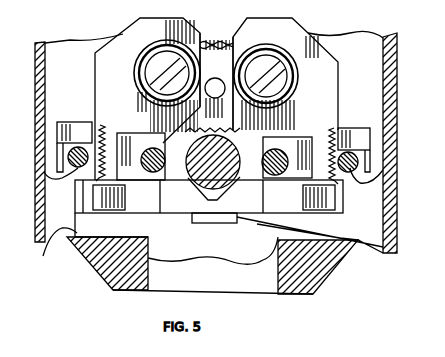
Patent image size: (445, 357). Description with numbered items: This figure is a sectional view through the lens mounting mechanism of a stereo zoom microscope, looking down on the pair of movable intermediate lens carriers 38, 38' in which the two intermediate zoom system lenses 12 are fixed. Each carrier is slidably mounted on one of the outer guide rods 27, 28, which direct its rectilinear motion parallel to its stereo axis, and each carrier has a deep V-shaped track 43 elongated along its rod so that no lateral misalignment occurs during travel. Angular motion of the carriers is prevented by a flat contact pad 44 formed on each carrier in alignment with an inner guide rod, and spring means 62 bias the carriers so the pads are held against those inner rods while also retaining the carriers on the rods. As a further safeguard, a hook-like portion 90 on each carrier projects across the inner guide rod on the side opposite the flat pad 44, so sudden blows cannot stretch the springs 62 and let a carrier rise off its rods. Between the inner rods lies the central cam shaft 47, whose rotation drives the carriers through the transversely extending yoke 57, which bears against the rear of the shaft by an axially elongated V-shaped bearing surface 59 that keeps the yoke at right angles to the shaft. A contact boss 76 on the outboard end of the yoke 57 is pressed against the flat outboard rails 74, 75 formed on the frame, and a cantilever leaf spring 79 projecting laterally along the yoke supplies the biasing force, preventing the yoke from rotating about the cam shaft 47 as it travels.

The intermediate movable zoom system lens 12 is at (168, 57).
The movable intermediate lens carrier 38' is at (147, 92).
The movable intermediate lens carrier 38 is at (285, 70).
The V-shaped track 43 is at (67, 167).
The flat contact pad 44 is at (157, 147).
The central cam shaft 47 is at (222, 169).
The spring means 62 is at (100, 127).
The outer guide rod 28 is at (44, 172).
The outer guide rod 27 is at (383, 170).
The upper yoke 57 is at (69, 201).
The V-shaped bearing surface 59 is at (200, 192).
The hook-like portion 90 is at (214, 197).
The outboard rail 75 is at (143, 232).
The cantilever leaf spring 79 is at (253, 232).
The contact boss 76 is at (62, 240).
The outboard rail 74 is at (247, 265).